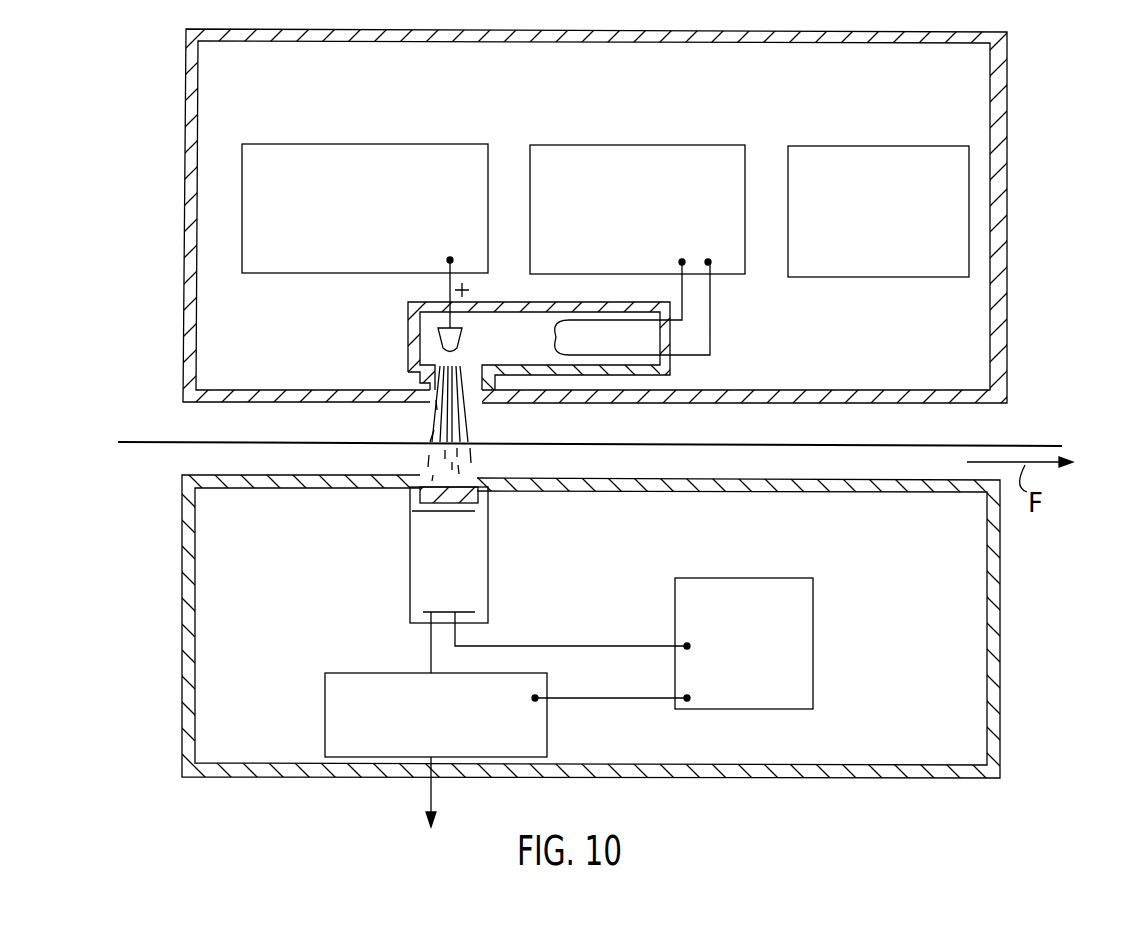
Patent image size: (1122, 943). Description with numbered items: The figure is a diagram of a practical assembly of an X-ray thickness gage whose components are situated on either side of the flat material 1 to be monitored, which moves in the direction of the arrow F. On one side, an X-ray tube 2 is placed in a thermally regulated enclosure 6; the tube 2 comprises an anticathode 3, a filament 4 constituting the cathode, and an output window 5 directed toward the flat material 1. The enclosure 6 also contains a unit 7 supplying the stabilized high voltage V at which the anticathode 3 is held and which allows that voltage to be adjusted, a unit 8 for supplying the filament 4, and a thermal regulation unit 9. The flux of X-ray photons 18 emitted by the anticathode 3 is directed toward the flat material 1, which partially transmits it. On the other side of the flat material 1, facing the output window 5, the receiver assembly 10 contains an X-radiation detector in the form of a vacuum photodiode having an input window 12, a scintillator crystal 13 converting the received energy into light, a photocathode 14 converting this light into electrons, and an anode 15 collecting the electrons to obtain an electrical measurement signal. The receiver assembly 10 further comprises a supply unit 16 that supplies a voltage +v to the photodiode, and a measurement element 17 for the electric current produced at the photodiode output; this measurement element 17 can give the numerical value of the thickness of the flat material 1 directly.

The flat material 1 is at (152, 442).
The X-ray tube 2 is at (408, 313).
The anticathode 3 is at (440, 340).
The filament 4 is at (550, 334).
The output window 5 is at (466, 369).
The thermally regulated enclosure 6 is at (192, 100).
The high voltage supply unit 7 is at (367, 157).
The filament supply unit 8 is at (620, 160).
The thermal regulation unit 9 is at (860, 165).
The receiver assembly 10 is at (1003, 656).
The input window 12 is at (467, 483).
The scintillator crystal 13 is at (472, 497).
The photocathode 14 is at (437, 513).
The anode 15 is at (424, 612).
The supply unit 16 is at (788, 645).
The measurement element 17 is at (325, 712).
The flux of X-ray photons 18 is at (440, 411).